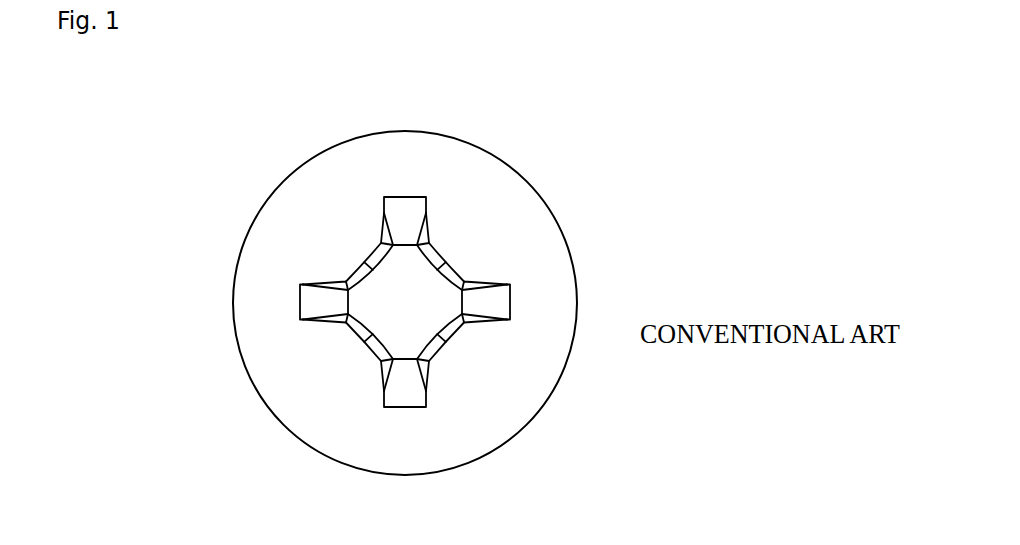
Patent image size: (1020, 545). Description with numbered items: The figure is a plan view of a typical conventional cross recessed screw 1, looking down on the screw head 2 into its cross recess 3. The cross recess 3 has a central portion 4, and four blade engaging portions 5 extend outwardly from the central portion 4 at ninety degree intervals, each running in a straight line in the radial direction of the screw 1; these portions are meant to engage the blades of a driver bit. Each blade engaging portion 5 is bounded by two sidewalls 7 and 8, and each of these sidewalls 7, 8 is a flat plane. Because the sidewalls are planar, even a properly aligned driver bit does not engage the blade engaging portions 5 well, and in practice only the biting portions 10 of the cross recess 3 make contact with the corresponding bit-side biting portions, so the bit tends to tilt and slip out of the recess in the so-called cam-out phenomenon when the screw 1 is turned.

The screw 1 is at (226, 227).
The screw head 2 is at (303, 197).
The cross recess 3 is at (403, 303).
The central portion 4 is at (417, 315).
The blade engaging portions 5 is at (407, 221).
The sidewall 7 is at (427, 273).
The sidewall 8 is at (386, 228).
The biting portions 10 is at (461, 283).